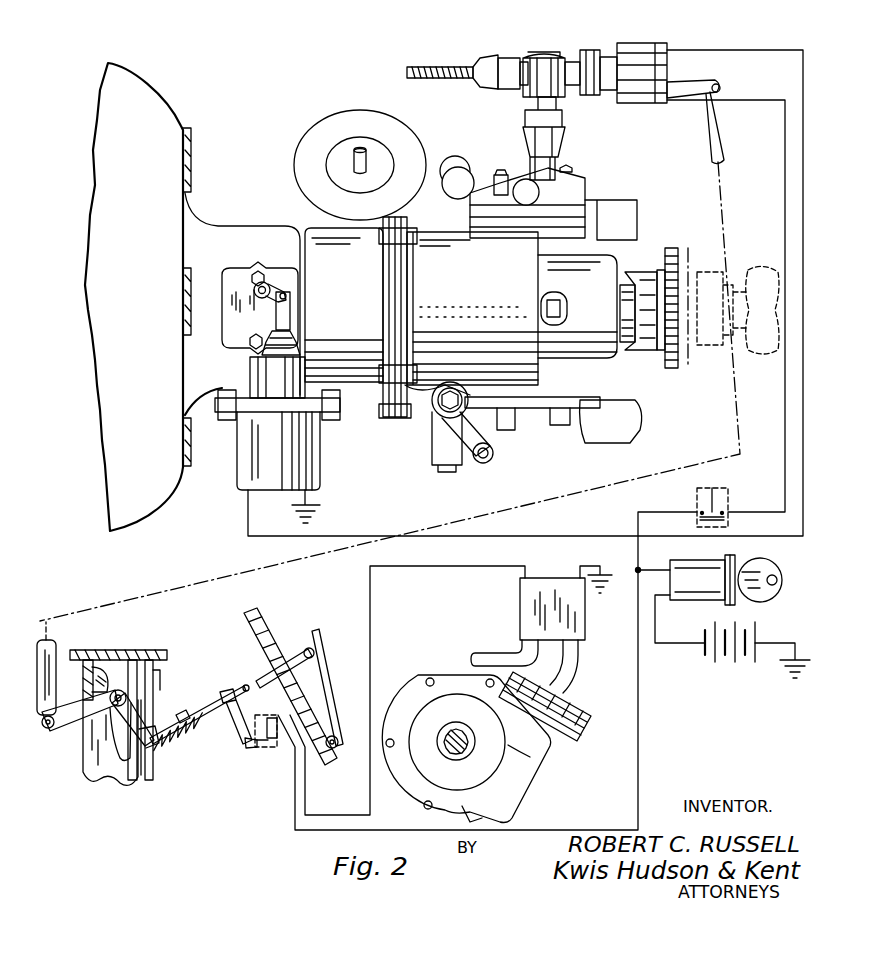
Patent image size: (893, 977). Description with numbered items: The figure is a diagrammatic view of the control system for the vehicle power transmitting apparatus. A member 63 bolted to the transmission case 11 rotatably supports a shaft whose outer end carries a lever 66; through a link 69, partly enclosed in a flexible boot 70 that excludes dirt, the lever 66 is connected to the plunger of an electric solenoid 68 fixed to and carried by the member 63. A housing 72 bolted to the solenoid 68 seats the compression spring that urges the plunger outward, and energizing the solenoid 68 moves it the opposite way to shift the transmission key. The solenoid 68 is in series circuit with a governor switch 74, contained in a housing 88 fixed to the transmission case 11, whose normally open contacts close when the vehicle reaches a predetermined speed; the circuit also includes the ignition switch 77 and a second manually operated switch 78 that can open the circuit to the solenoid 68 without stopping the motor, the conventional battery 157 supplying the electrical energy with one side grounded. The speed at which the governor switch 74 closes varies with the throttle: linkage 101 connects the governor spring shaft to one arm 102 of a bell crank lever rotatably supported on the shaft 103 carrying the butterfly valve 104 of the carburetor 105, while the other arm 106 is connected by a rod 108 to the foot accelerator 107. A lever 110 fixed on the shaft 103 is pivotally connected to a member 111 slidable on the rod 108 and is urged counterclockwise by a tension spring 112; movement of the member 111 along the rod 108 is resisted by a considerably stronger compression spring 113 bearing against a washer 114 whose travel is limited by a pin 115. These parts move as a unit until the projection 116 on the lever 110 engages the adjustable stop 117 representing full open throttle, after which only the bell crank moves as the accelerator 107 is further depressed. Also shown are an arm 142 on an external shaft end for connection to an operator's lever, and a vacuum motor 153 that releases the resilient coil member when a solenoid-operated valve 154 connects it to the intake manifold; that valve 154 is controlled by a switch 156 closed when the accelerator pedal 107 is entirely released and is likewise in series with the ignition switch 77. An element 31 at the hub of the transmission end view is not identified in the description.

The transmission case 11 is at (220, 238).
The pump drive shaft 31 is at (455, 757).
The member 63 is at (224, 300).
The lever 66 is at (257, 286).
The electric solenoid 68 is at (322, 443).
The link 69 is at (291, 302).
The flexible boot 70 is at (297, 345).
The housing 72 is at (256, 376).
The governor switch 74 is at (634, 48).
The ignition switch 77 is at (700, 603).
The second manually operated switch 78 is at (697, 500).
The housing 88 is at (590, 55).
The linkage 101 is at (711, 141).
The arm of bell crank lever 102 is at (76, 724).
The shaft 103 is at (86, 700).
The butterfly valve 104 is at (101, 668).
The carburetor 105 is at (148, 668).
The arm of bell crank lever 106 is at (118, 742).
The foot accelerator 107 is at (322, 672).
The rod 108 is at (260, 682).
The lever 110 is at (140, 712).
The member 111 is at (125, 781).
The tension spring 112 is at (185, 768).
The compression spring 113 is at (200, 724).
The washer 114 is at (152, 716).
The pin 115 is at (206, 700).
The projection 116 is at (120, 689).
The adjustable stop 117 is at (156, 672).
The arm 142 is at (480, 442).
The vacuum motor 153 is at (344, 134).
The solenoid-operated valve 154 is at (586, 621).
The switch 156 is at (268, 758).
The battery 157 is at (727, 665).